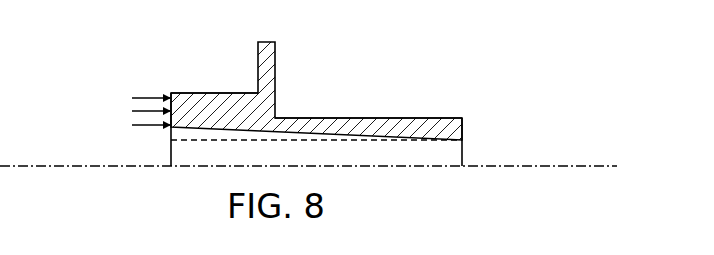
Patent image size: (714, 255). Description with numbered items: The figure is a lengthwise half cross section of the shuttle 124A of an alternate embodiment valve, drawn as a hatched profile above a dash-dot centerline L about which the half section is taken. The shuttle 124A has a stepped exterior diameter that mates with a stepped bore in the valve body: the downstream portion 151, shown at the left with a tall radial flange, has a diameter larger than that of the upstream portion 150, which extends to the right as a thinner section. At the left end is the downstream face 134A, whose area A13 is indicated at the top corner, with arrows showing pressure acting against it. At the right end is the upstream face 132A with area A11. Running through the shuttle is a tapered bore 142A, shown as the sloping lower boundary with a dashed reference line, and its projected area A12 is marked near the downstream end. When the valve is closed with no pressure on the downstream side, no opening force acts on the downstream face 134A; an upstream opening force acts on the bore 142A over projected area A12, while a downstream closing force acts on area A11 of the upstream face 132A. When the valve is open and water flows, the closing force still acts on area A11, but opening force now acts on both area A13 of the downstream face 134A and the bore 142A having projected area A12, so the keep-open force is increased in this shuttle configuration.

The shuttle 124A is at (363, 102).
The downstream portion 151 is at (204, 93).
The upstream portion 150 is at (299, 117).
The area of downstream end A13 is at (173, 95).
The downstream face 134A is at (166, 121).
The projected area of tapered bore A12 is at (170, 156).
The bore 142A is at (364, 140).
The upstream face 132A is at (480, 112).
The area of upstream end A11 is at (463, 130).
The engine central axis line L is at (598, 165).